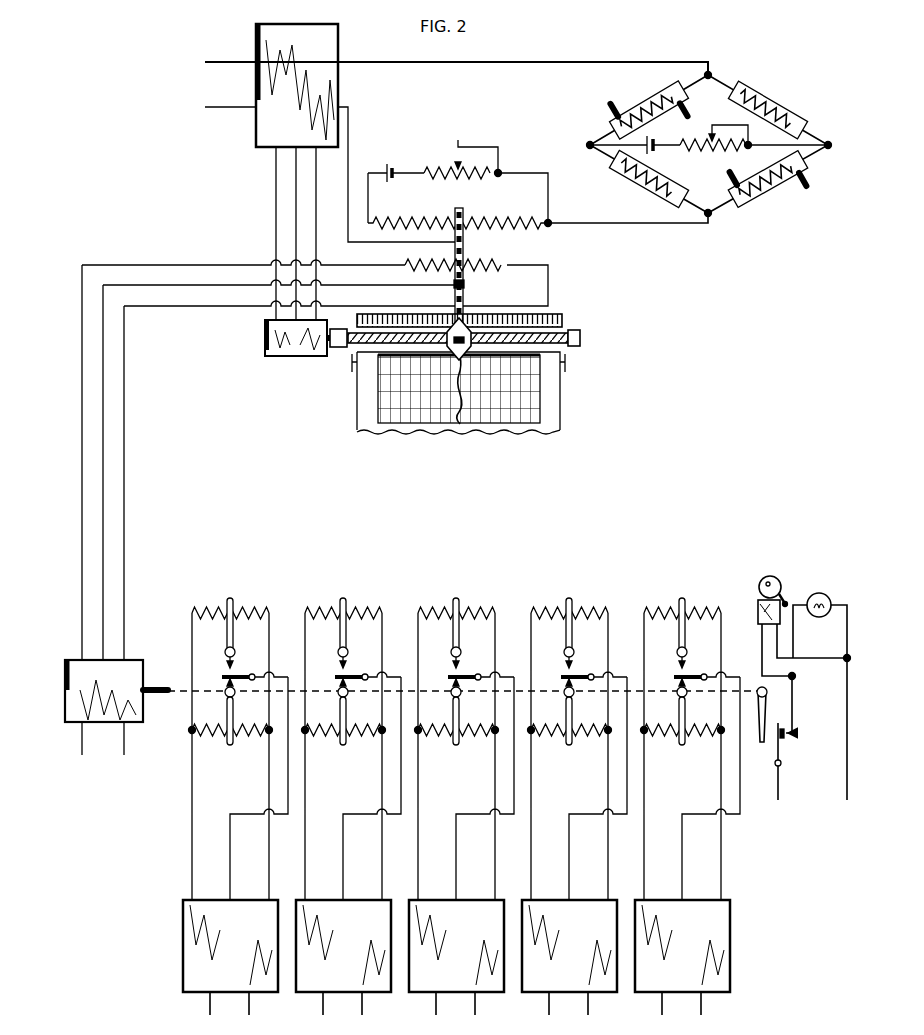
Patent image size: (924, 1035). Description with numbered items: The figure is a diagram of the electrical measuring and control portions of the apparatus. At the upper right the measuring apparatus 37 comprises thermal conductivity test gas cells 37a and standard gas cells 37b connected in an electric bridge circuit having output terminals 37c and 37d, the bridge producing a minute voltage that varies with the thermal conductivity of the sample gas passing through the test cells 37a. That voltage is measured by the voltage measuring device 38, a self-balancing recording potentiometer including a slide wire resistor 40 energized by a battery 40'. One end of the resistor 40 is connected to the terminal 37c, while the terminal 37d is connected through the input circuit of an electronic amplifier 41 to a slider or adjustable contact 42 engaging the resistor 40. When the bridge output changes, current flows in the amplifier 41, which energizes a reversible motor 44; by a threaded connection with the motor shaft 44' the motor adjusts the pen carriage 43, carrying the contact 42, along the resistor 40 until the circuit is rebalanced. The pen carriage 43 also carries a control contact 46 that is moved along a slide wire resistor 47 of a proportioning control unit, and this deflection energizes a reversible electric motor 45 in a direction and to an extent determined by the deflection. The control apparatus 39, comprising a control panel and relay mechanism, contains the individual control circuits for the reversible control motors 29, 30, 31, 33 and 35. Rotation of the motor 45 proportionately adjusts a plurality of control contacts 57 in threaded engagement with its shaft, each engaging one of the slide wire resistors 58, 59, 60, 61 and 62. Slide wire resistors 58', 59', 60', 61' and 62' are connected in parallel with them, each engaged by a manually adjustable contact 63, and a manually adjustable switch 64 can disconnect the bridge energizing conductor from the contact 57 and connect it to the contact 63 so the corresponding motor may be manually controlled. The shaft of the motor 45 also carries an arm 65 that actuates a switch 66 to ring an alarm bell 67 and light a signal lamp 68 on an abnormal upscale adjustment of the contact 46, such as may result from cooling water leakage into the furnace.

The electronic amplifier 41 is at (256, 44).
The measuring apparatus 37 is at (792, 94).
The thermal conductivity test gas cells 37a is at (653, 100).
The standard gas cells 37b is at (781, 88).
The bridge output terminal 37c is at (657, 224).
The bridge output terminal 37d is at (482, 72).
The slide wire resistor 40 is at (458, 212).
The battery 40' is at (454, 180).
The slider or adjustable contact 42 is at (464, 235).
The slide wire resistor 47 is at (496, 262).
The control contact 46 is at (468, 279).
The voltage measuring device 38 is at (583, 295).
The reversible motor 44 is at (276, 337).
The motor shaft 44' is at (467, 327).
The pen carriage 43 is at (464, 354).
The reversible electric motor 45 is at (140, 660).
The control apparatus 39 is at (596, 594).
The slide wire resistor 62 is at (231, 745).
The slide wire resistor 62' is at (228, 602).
The slide wire resistor 61 is at (344, 745).
The slide wire resistor 61' is at (341, 602).
The slide wire resistor 60 is at (457, 745).
The slide wire resistor 60' is at (454, 602).
The slide wire resistor 59 is at (570, 745).
The slide wire resistor 59' is at (567, 602).
The slide wire resistor 58 is at (683, 745).
The slide wire resistor 58' is at (680, 602).
The manually adjustable contact 63 is at (233, 637).
The manually adjustable switch 64 is at (224, 676).
The control contact 57 is at (227, 707).
The arm 65 is at (764, 703).
The switch 66 is at (780, 748).
The alarm bell 67 is at (762, 578).
The signal lamp 68 is at (816, 594).
The reversible control motor 35 is at (194, 996).
The reversible control motor 33 is at (307, 996).
The reversible control motor 31 is at (420, 996).
The reversible control motor 30 is at (533, 996).
The reversible control motor 29 is at (646, 996).